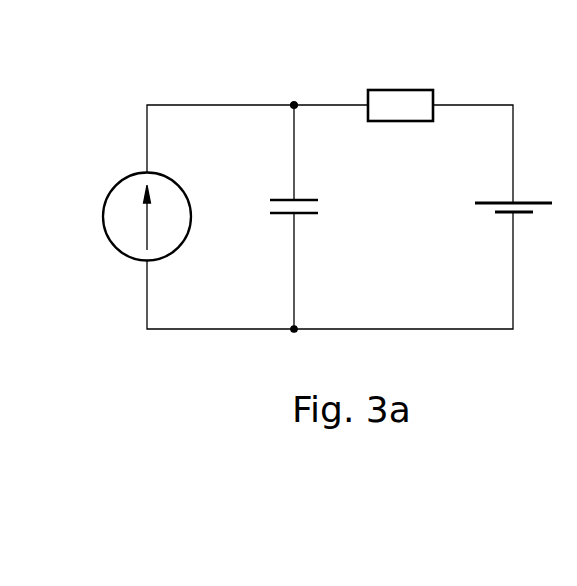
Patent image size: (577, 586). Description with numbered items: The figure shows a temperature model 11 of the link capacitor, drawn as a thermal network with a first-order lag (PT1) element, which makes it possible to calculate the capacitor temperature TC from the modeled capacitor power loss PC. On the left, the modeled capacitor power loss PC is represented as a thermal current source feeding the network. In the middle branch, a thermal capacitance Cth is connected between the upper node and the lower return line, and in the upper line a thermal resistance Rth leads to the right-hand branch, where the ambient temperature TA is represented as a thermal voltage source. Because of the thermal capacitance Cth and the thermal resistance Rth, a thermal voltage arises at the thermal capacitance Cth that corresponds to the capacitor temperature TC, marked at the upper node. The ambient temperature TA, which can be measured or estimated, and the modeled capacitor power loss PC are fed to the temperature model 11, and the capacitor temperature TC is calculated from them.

The temperature model 11 is at (317, 220).
The modeled capacitor power loss PC is at (134, 214).
The thermal capacitance Cth is at (319, 209).
The thermal resistance Rth is at (400, 84).
The ambient temperature TA is at (516, 186).
The capacitor temperature TC is at (260, 61).